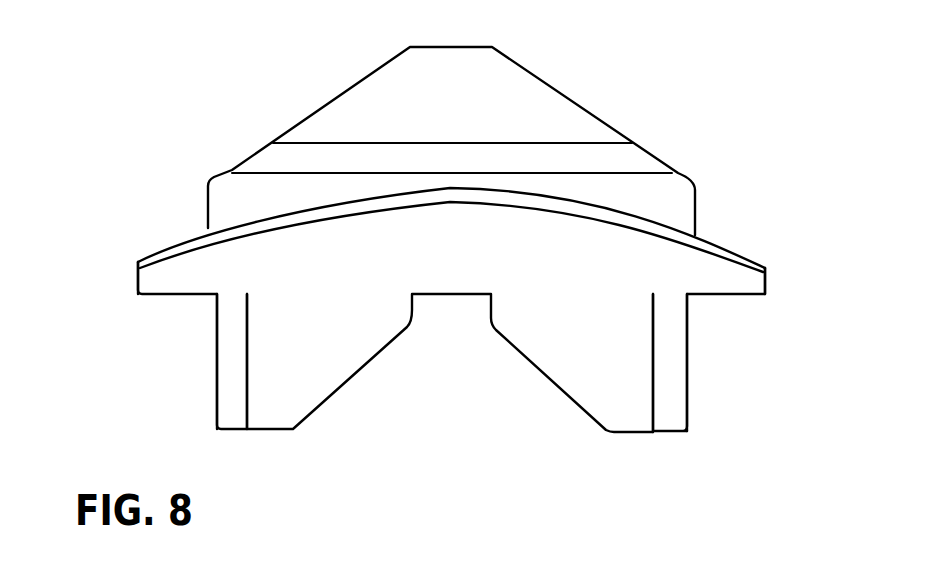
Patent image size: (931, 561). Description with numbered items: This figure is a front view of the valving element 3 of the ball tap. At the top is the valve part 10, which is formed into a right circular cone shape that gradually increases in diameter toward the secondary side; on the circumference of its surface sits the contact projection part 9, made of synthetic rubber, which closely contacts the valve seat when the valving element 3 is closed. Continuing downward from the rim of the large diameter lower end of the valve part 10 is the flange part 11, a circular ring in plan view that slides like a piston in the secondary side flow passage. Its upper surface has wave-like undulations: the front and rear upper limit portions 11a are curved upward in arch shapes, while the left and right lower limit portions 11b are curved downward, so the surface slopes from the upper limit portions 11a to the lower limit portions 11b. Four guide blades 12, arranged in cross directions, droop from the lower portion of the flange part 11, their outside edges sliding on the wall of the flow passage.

The valving element 3 is at (762, 70).
The contact projection part 9 is at (263, 153).
The valve part 10 is at (593, 133).
The flange part 11 is at (737, 255).
The upper limit portions 11a is at (448, 187).
The lower limit portions 11b is at (140, 262).
The guide blades 12 is at (282, 385).